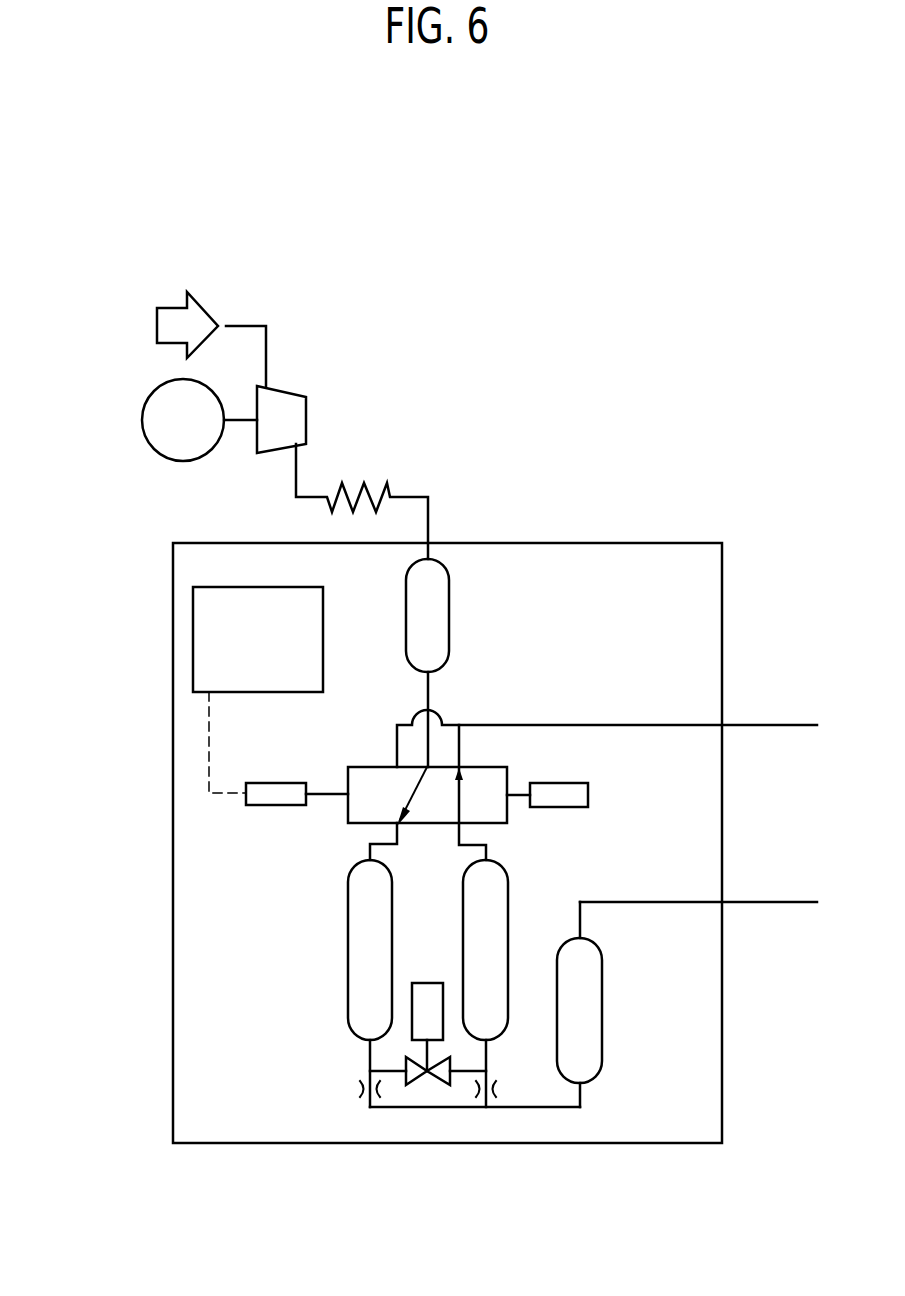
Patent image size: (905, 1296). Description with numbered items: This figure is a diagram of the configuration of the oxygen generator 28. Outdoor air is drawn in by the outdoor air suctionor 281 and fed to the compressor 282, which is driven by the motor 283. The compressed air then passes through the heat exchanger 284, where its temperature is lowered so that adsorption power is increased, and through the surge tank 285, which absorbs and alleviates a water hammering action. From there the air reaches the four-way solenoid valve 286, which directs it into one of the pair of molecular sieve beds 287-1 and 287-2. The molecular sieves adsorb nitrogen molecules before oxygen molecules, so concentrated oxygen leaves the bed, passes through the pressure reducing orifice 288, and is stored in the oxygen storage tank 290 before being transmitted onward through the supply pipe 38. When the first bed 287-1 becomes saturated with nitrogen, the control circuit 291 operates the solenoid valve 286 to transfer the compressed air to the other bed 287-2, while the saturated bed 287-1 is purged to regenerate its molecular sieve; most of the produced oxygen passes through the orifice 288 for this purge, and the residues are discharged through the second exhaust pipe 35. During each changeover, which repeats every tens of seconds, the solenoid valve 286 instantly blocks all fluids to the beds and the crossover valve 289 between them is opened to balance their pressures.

The oxygen generator 28 is at (578, 412).
The second exhaust pipe 35 is at (790, 724).
The supply pipe 38 is at (790, 900).
The outdoor air suctionor 281 is at (250, 322).
The compressor 282 is at (294, 393).
The motor 283 is at (142, 422).
The heat exchanger 284 is at (385, 483).
The surge tank 285 is at (450, 613).
The 4-way solenoid valve 286 is at (590, 793).
The molecular sieve bed 287-1 is at (348, 965).
The molecular sieve bed 287-2 is at (463, 907).
The pressure reducing orifice 288 is at (363, 1092).
The crossover valve 289 is at (427, 1082).
The oxygen storage tank 290 is at (603, 1009).
The control circuit 291 is at (193, 630).